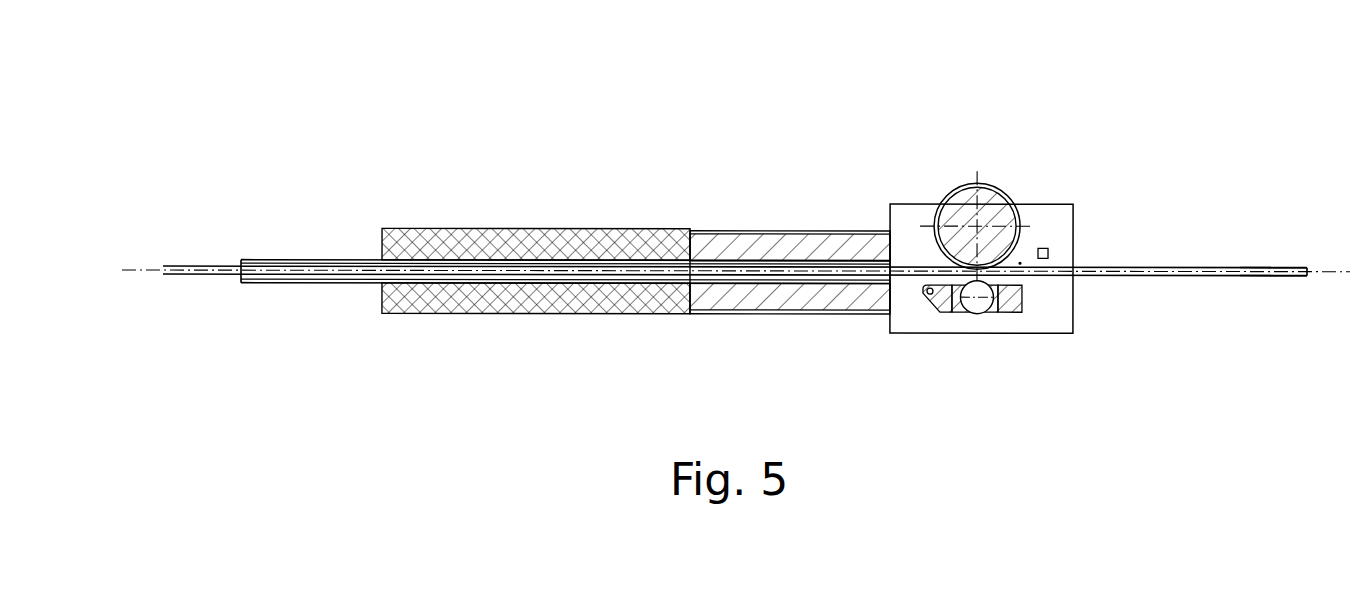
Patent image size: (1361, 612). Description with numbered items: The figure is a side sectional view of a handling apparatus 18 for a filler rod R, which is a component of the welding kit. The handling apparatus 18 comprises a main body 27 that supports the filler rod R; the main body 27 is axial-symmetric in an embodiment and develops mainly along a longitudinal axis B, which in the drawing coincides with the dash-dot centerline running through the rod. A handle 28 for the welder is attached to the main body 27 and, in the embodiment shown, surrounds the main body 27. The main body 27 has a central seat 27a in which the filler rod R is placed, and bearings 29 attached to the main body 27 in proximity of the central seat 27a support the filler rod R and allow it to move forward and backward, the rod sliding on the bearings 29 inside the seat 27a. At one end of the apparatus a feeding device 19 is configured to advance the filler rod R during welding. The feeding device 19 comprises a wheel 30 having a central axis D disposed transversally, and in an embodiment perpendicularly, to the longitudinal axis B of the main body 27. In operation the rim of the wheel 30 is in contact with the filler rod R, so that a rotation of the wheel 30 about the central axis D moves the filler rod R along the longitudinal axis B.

The handling apparatus 18 is at (675, 215).
The feeding device 19 is at (962, 172).
The central axis D is at (985, 217).
The wheel 30 is at (1020, 217).
The bearings 29 is at (992, 311).
The handle 28 is at (612, 313).
The main body 27 is at (565, 316).
The central seat 27a is at (750, 284).
The filler rod R is at (1197, 266).
The longitudinal axis B is at (1287, 267).